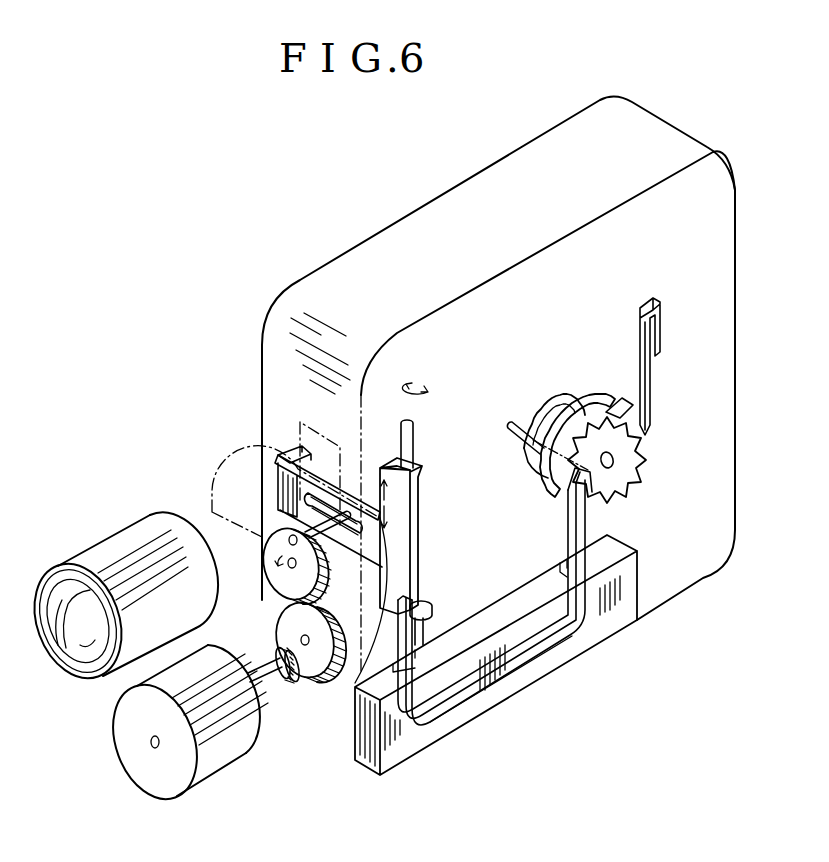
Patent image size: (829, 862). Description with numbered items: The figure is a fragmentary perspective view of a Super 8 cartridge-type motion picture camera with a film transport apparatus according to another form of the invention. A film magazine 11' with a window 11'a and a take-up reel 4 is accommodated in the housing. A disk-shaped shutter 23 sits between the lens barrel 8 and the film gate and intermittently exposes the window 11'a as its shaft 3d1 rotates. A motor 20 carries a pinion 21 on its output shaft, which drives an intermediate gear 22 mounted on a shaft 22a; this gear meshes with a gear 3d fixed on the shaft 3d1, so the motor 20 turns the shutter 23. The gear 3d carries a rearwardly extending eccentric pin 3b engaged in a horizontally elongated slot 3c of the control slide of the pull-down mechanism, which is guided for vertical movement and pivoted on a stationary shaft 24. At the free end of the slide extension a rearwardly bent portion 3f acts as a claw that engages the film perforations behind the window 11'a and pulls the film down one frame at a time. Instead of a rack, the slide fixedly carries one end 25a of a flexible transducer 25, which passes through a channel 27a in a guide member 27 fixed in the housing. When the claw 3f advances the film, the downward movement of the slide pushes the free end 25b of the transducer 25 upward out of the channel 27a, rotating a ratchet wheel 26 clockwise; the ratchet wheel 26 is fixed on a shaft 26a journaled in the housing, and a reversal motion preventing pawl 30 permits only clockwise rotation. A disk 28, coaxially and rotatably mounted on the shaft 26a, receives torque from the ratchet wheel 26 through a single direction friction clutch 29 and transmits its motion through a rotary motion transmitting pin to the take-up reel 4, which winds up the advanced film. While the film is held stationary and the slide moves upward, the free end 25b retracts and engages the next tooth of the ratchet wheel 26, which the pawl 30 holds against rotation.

The film magazine 11' is at (498, 384).
The window 11'a is at (330, 455).
The disk-shaped shutter 23 is at (236, 462).
The bent portion 3f is at (293, 450).
The elongated slot 3c is at (340, 528).
The projection 3b is at (330, 540).
The gear 3d is at (285, 578).
The shaft 3d1 is at (278, 565).
The lens barrel 8 is at (150, 540).
The motor 20 is at (238, 755).
The pinion 21 is at (285, 680).
The intermediate gear 22 is at (312, 662).
The shaft 22a is at (306, 648).
The stationary shaft 24 is at (413, 447).
The take-up reel 4 is at (556, 418).
The disk 28 is at (552, 492).
The ratchet wheel 26 is at (640, 483).
The shaft 26a is at (618, 460).
The single direction friction clutch 29 is at (600, 410).
The reversal motion preventing pawl 30 is at (652, 392).
The flexible transducer 25 is at (568, 550).
The free end 25b is at (605, 505).
The end 25a is at (420, 618).
The guide member 27 is at (603, 634).
The channel 27a is at (540, 660).